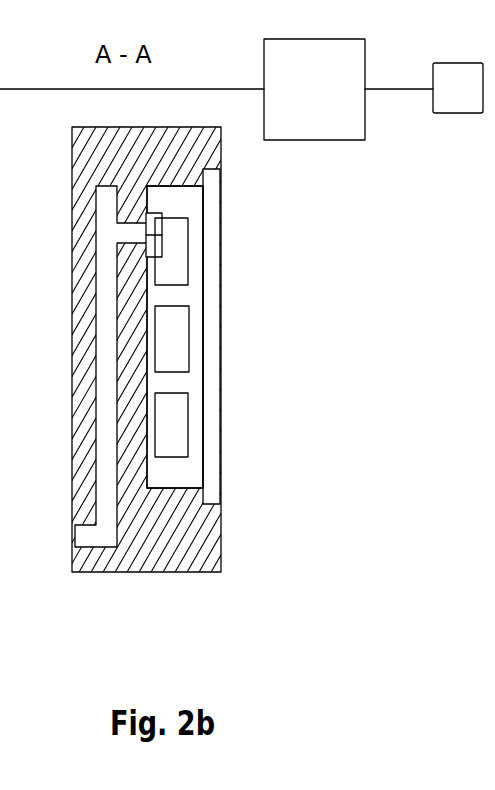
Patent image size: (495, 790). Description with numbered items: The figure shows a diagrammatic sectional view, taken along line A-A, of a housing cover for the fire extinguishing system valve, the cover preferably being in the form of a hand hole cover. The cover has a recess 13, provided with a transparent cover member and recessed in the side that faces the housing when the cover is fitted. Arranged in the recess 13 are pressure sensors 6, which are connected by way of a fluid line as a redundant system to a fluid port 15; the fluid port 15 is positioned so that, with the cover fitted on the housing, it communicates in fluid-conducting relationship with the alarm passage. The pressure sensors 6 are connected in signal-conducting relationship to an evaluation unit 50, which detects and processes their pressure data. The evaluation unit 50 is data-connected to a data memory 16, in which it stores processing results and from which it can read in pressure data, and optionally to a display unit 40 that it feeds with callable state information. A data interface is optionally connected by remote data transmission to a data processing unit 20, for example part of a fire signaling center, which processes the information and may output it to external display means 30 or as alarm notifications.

The pressure sensor 6 is at (155, 228).
The recess 13 is at (174, 295).
The fluid port 15 is at (87, 540).
The data memory 16 is at (167, 337).
The data processing unit 20 is at (314, 89).
The external display means 30 is at (458, 88).
The display unit 40 is at (165, 418).
The evaluation unit 50 is at (177, 240).